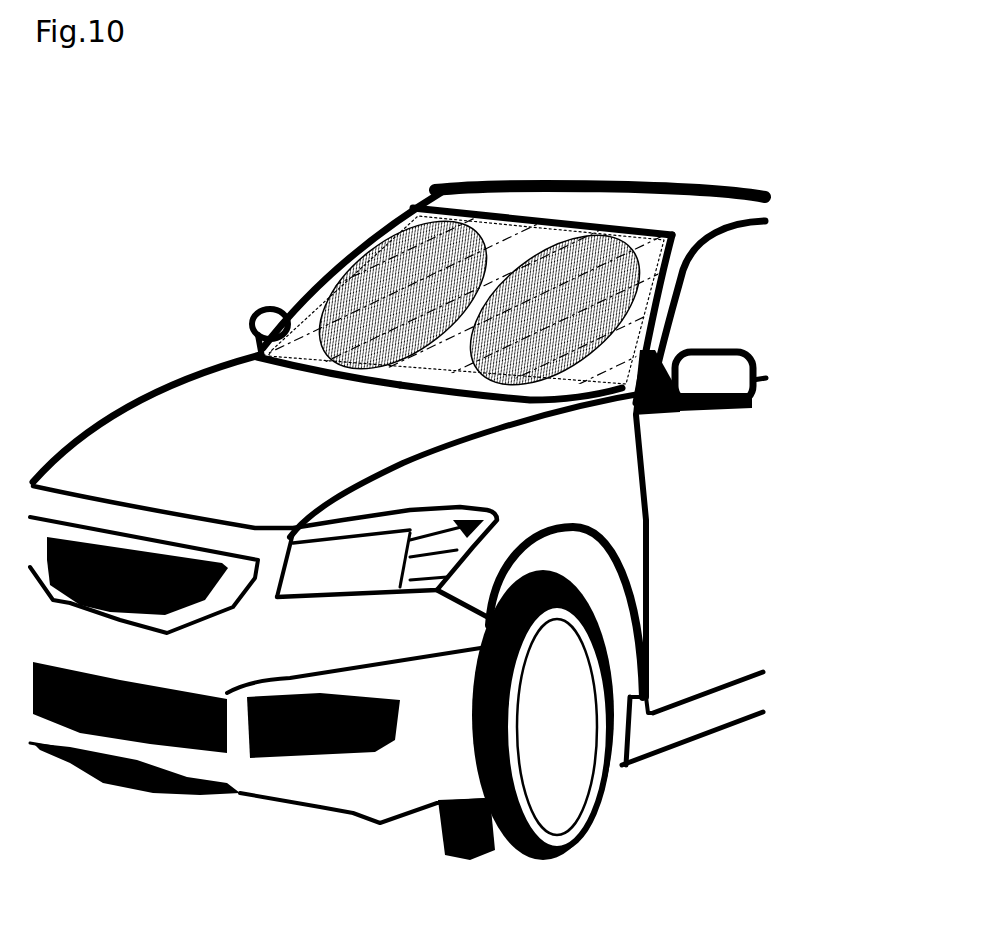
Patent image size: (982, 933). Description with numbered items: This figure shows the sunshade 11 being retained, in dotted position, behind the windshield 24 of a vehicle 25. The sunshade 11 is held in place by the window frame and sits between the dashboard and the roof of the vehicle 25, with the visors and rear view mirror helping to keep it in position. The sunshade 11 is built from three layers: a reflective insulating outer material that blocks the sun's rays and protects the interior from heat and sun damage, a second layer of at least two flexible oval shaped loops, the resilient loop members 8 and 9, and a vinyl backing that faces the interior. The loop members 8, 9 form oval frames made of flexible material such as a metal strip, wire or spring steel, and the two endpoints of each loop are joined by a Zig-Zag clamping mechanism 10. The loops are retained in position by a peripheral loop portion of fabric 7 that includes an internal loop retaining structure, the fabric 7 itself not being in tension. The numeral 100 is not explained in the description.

The vehicle windshield 100 is at (380, 250).
The Zig-Zag clamping mechanism 10 is at (360, 270).
The sunshade 11 is at (547, 215).
The peripheral loop portion of fabric 7 is at (672, 253).
The windshield 24 is at (343, 265).
The vehicle 25 is at (188, 367).
The resilient loop member 9 is at (307, 378).
The resilient loop member 8 is at (437, 393).